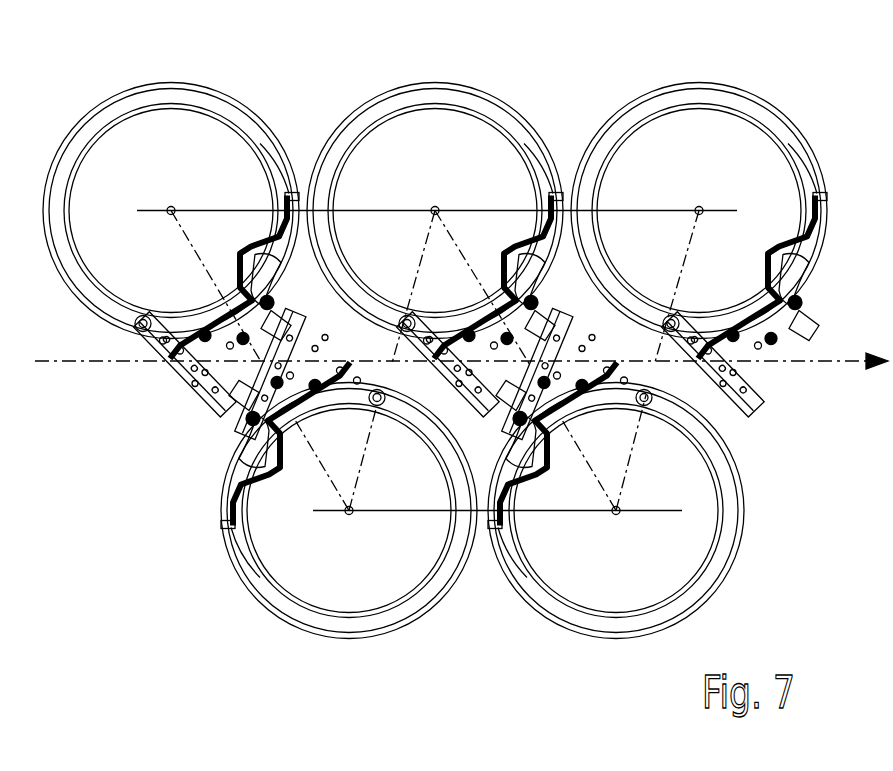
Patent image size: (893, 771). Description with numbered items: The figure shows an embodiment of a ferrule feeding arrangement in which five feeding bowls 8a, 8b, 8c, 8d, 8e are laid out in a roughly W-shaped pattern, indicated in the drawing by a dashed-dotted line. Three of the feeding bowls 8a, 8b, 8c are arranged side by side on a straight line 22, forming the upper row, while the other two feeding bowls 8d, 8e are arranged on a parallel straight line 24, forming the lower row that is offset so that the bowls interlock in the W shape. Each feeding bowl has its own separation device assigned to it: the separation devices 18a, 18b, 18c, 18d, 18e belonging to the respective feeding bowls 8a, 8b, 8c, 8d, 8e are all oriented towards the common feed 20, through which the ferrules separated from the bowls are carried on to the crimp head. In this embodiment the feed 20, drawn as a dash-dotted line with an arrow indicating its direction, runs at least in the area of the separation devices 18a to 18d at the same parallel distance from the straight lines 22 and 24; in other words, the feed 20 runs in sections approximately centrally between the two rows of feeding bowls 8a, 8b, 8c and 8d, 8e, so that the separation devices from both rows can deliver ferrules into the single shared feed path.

The feeding bowl 8a is at (210, 77).
The feeding bowl 8b is at (475, 78).
The feeding bowl 8c is at (742, 78).
The feeding bowl 8d is at (250, 593).
The feeding bowl 8e is at (727, 585).
The separation device 18a is at (203, 398).
The separation device 18b is at (427, 330).
The separation device 18c is at (808, 326).
The separation device 18d is at (335, 385).
The separation device 18e is at (617, 390).
The common feed 20 is at (824, 366).
The straight line 22 is at (362, 210).
The parallel straight line 24 is at (650, 513).